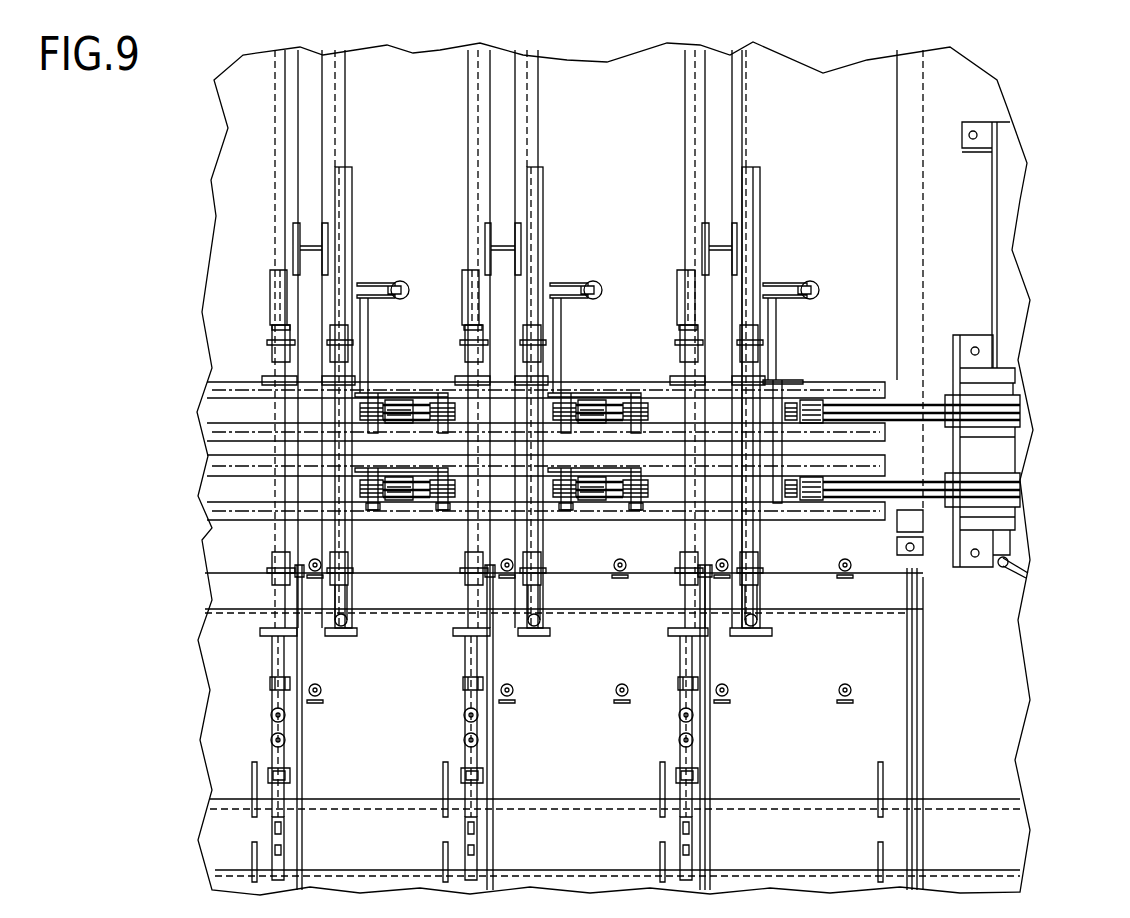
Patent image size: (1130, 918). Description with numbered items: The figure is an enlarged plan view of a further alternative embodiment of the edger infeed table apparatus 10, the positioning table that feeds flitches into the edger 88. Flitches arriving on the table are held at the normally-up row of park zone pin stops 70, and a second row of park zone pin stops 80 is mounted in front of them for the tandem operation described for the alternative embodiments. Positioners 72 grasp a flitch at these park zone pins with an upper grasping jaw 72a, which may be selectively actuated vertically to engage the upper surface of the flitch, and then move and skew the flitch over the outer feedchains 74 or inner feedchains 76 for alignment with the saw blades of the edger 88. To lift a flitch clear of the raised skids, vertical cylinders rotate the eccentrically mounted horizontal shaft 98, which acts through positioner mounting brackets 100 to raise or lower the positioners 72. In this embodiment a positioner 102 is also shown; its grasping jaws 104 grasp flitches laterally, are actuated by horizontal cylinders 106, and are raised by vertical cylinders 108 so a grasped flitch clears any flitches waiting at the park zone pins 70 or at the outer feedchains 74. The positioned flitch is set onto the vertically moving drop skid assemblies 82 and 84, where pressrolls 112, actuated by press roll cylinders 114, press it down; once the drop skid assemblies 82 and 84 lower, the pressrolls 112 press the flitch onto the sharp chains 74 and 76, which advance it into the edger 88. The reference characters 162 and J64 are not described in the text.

The edger infeed table apparatus 10 is at (186, 294).
The park zone pin stops 70 is at (313, 562).
The positioners 72 is at (352, 185).
The upper grasping jaw 72a is at (343, 620).
The outer feedchains 74 is at (418, 520).
The inner feedchains 76 is at (418, 513).
The second row of park zone pin stops 80 is at (311, 705).
The drop skid assembly 82 is at (215, 520).
The drop skid assembly 84 is at (230, 432).
The edger 88 is at (1040, 437).
The eccentrically mounted horizontal shaft 98 is at (340, 112).
The positioner mounting brackets 100 is at (348, 342).
The positioner 102 is at (270, 283).
The grasping jaws 104 is at (272, 683).
The horizontal cylinders 106 is at (277, 862).
The vertical cylinders 108 is at (271, 740).
The pressrolls 112 is at (422, 490).
The press roll cylinders 114 is at (402, 280).
The lower guide bar 162 is at (250, 842).
The guide bar J64 is at (250, 765).